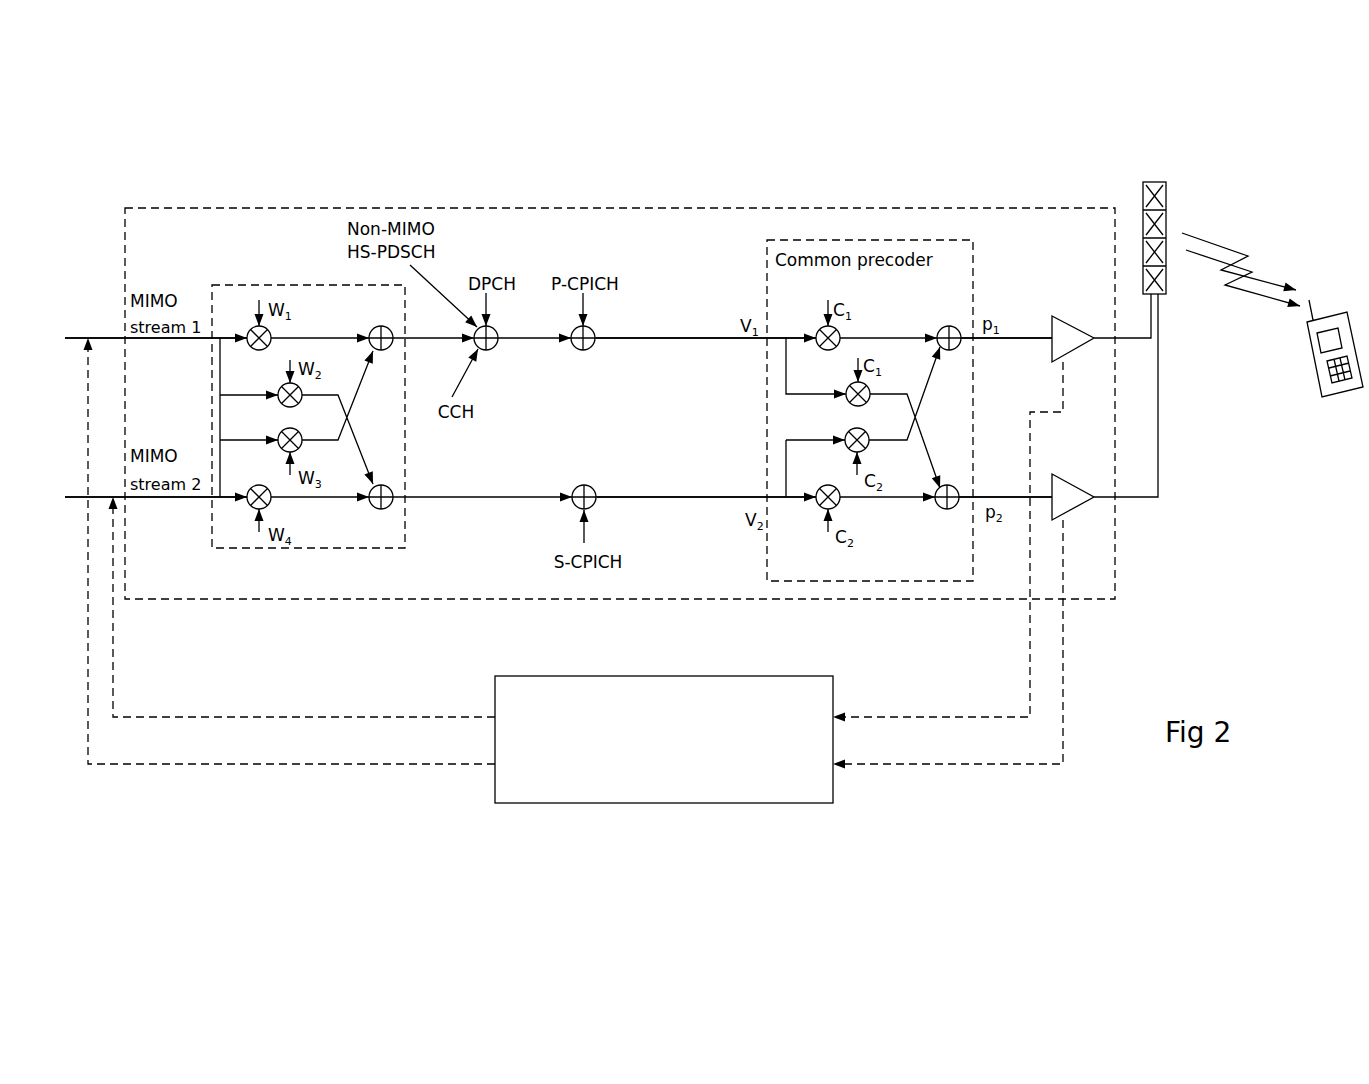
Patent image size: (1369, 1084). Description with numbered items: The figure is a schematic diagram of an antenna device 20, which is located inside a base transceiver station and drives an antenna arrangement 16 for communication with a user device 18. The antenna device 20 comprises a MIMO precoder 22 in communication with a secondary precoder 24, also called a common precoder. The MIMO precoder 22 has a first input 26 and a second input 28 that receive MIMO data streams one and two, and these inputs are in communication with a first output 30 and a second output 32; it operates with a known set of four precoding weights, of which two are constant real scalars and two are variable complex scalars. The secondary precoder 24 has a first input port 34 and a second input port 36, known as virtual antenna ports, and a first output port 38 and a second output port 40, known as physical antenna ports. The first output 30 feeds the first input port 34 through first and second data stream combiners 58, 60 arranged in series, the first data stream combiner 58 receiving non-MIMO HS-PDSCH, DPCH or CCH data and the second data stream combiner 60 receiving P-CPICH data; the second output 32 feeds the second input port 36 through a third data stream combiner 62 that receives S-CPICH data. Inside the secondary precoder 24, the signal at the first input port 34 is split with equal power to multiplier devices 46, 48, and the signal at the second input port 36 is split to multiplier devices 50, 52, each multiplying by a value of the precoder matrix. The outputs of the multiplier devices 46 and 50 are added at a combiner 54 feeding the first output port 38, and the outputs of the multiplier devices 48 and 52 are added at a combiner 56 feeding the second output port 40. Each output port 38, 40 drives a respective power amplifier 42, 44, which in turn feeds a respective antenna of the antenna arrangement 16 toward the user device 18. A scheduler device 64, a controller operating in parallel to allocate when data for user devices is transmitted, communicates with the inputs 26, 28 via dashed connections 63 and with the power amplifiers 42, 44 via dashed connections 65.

The antenna arrangement 16 is at (1163, 195).
The user device 18 is at (1330, 400).
The antenna device 20 is at (527, 207).
The MIMO precoder 22 is at (305, 548).
The secondary precoder 24 is at (787, 581).
The first input 26 is at (173, 366).
The second input 28 is at (173, 527).
The first output 30 is at (406, 366).
The second output 32 is at (408, 527).
The first input port 34 is at (731, 366).
The second input port 36 is at (732, 491).
The first output port 38 is at (977, 366).
The second output port 40 is at (975, 491).
The power amplifier 42 is at (1060, 325).
The power amplifier 44 is at (1075, 505).
The multiplier device 46 is at (818, 330).
The multiplier device 48 is at (846, 401).
The multiplier device 50 is at (845, 437).
The multiplier device 52 is at (818, 505).
The combiner 54 is at (950, 326).
The combiner 56 is at (947, 510).
The first data stream combiner 58 is at (492, 348).
The second data stream combiner 60 is at (595, 330).
The third data stream combiner 62 is at (575, 488).
The connections 63 is at (437, 717).
The scheduler device 64 is at (682, 803).
The connections 65 is at (900, 717).